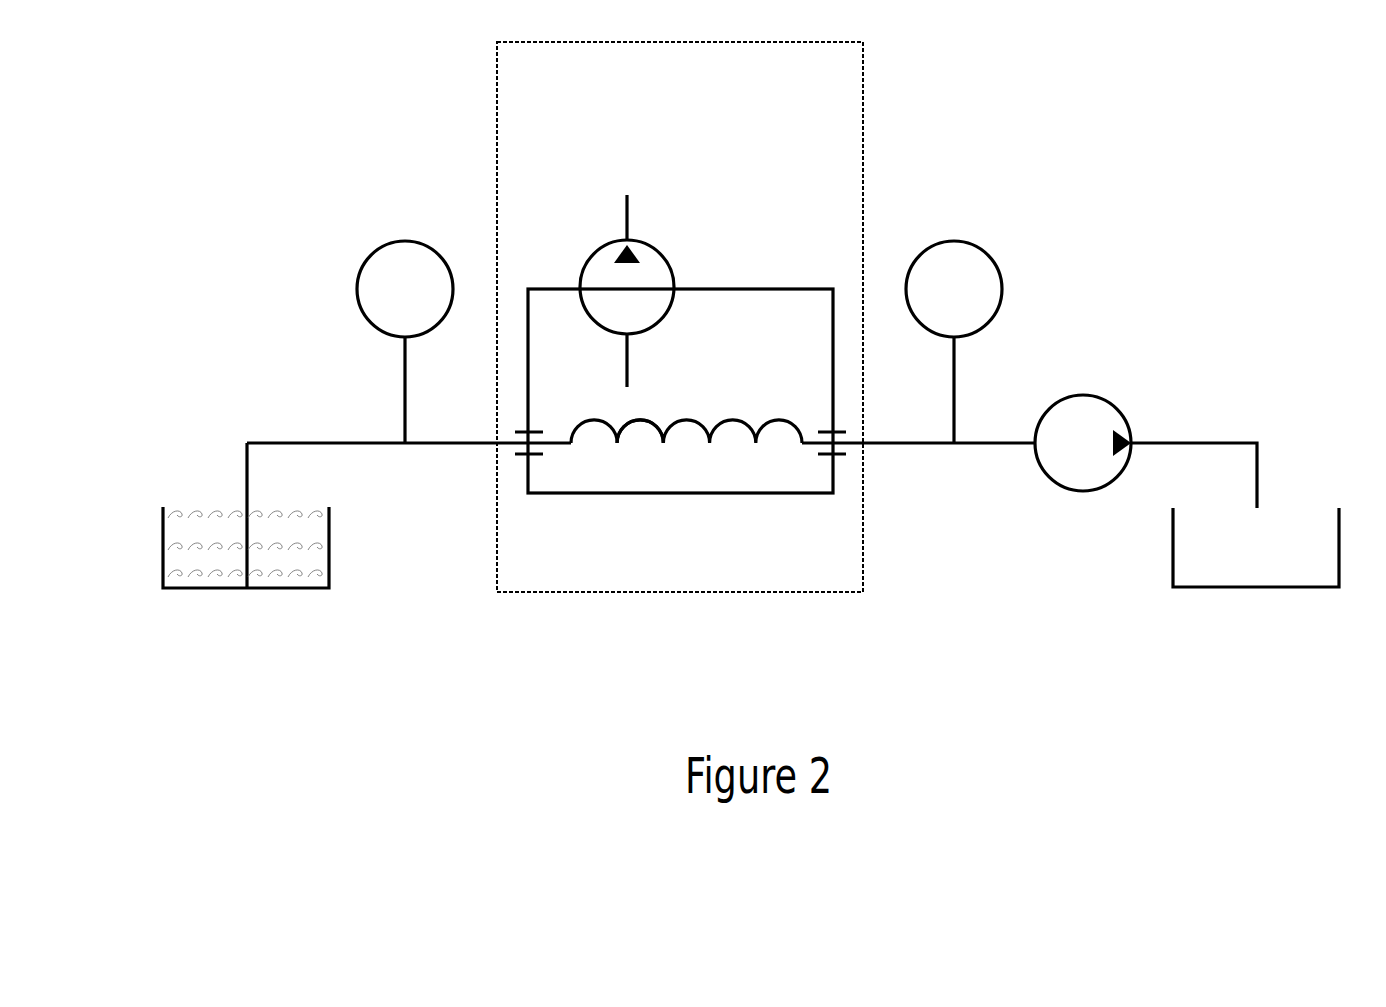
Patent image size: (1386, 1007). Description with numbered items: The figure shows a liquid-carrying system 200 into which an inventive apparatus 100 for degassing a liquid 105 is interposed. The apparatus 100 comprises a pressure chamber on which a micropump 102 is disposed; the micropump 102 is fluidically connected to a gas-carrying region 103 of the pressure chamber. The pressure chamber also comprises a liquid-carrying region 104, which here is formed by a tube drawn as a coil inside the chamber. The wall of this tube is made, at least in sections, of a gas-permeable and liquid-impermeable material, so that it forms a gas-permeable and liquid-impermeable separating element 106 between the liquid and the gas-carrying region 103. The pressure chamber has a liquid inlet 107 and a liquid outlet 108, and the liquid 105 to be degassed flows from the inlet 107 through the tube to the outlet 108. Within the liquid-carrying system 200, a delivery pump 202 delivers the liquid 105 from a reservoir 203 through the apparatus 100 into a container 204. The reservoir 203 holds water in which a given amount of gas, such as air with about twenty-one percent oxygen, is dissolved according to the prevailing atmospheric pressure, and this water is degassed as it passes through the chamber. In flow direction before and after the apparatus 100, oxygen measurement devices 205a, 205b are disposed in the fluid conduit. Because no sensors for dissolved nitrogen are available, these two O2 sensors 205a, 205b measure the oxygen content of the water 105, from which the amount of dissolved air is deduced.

The apparatus 100 is at (621, 165).
The micropump 102 is at (653, 251).
The gas-carrying region 103 is at (782, 313).
The liquid-carrying region 104 is at (758, 444).
The liquid 105 is at (210, 510).
The separating element 106 is at (641, 421).
The liquid inlet 107 is at (517, 458).
The liquid outlet 108 is at (833, 458).
The liquid-carrying system 200 is at (319, 186).
The delivery pump 202 is at (1082, 395).
The reservoir 203 is at (257, 590).
The container 204 is at (1257, 589).
The oxygen measurement device 205a is at (405, 241).
The oxygen measurement device 205b is at (953, 241).